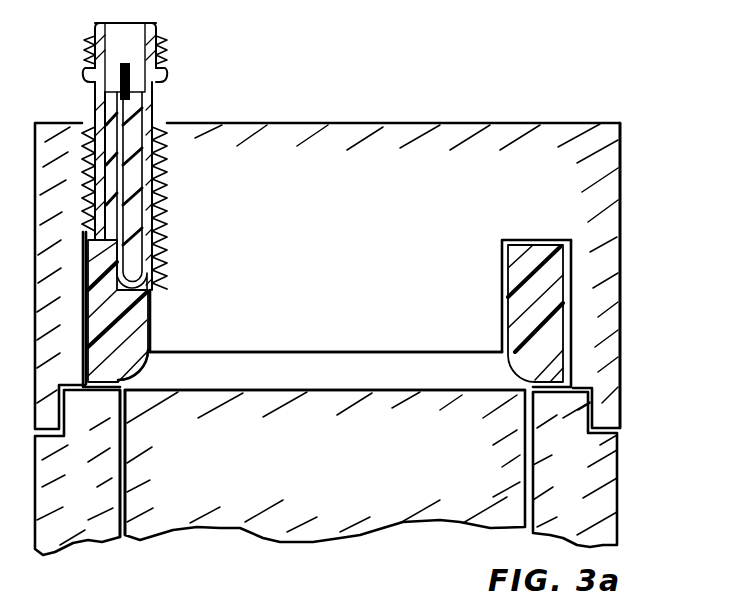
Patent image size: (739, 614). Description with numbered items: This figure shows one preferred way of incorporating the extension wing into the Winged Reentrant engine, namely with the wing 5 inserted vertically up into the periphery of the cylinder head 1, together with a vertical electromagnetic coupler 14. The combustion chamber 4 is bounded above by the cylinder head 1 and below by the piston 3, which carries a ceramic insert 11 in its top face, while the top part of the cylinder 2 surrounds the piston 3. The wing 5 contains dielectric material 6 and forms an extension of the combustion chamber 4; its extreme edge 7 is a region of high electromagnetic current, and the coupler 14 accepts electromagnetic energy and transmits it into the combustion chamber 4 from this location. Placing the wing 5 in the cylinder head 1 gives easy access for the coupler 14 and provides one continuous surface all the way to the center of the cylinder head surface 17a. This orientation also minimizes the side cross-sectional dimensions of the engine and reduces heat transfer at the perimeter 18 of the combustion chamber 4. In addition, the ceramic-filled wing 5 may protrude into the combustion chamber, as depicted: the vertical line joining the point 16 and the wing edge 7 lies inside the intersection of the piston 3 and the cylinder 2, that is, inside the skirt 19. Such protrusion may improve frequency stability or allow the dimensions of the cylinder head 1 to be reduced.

The cylinder head 1 is at (327, 276).
The cylinder 2 is at (575, 469).
The piston 3 is at (280, 472).
The combustion chamber 4 is at (325, 371).
The extension wing 5 is at (572, 286).
The dielectric material 6 is at (560, 339).
The extreme edge of the wing 7 is at (523, 240).
The ceramic insert 11 is at (152, 336).
The electromagnetic coupler 14 is at (155, 108).
The wing protrusion edge 16 is at (500, 349).
The cylinder head surface 17a is at (328, 348).
The perimeter of the combustion chamber 18 is at (132, 366).
The skirt 19 is at (138, 510).